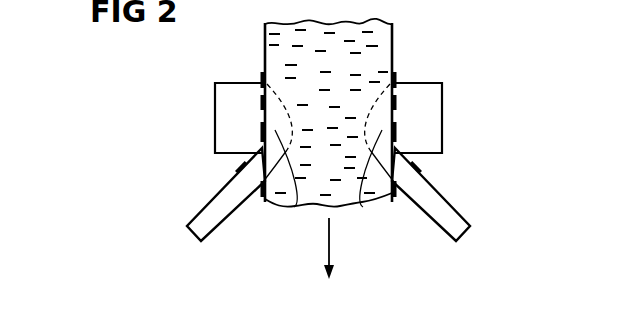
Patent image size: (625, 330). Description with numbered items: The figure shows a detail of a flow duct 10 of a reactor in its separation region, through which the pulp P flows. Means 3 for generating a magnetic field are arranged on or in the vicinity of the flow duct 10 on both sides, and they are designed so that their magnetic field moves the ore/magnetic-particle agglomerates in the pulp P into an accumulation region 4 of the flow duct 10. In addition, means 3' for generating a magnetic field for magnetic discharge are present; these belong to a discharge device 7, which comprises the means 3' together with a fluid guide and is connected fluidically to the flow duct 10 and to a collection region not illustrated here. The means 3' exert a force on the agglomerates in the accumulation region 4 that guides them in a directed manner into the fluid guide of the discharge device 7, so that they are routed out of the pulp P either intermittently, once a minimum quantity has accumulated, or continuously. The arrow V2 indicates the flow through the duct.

The flow duct 10 is at (250, 38).
The pulp P is at (394, 51).
The means for generating a magnetic field 3 is at (330, 117).
The means for generating a magnetic field for magnetic discharge 3' is at (330, 159).
The discharge device 7 is at (200, 160).
The accumulation region 4 is at (328, 163).
The volume flow rate V2 is at (327, 252).